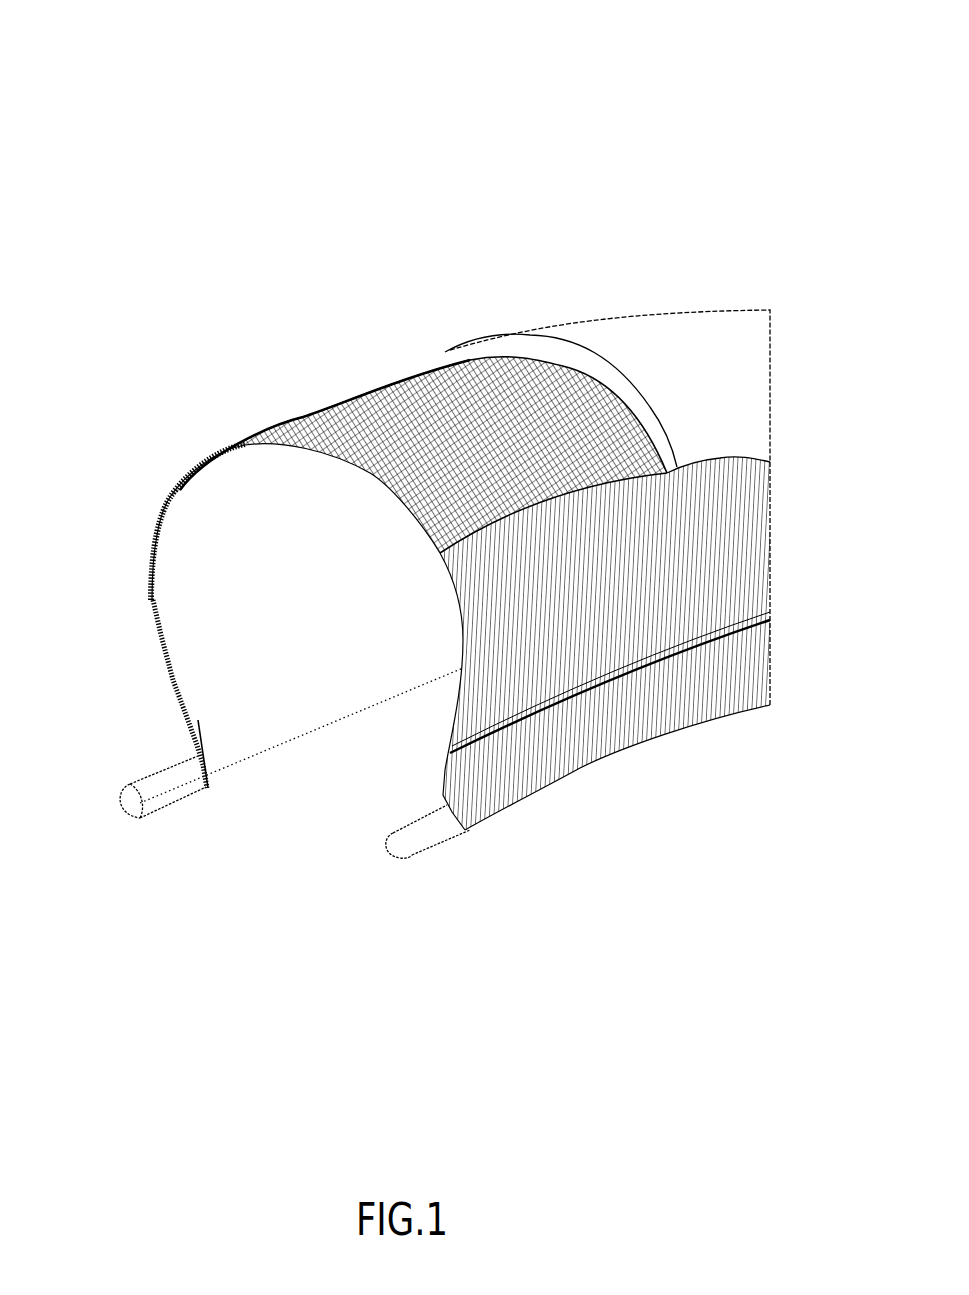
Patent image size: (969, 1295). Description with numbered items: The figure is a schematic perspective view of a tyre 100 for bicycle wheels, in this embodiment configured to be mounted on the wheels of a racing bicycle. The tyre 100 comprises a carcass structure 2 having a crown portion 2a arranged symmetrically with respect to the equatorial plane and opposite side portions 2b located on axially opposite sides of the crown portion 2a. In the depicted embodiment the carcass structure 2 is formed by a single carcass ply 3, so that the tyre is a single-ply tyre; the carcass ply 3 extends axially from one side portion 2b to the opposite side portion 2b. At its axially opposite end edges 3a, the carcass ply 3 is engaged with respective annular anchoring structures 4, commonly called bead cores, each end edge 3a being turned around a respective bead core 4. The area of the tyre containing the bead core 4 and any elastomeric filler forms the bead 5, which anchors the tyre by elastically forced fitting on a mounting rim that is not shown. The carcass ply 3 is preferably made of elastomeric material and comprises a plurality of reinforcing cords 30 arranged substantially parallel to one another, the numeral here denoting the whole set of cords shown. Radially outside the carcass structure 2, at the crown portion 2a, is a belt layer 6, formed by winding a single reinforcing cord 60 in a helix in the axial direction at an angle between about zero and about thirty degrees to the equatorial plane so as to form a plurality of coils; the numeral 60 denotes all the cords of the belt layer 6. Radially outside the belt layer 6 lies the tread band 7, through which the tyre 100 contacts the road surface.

The tyre 100 is at (297, 308).
The carcass structure 2 is at (232, 678).
The crown portion 2a is at (170, 478).
The side portions 2b is at (165, 726).
The carcass ply 3 is at (150, 565).
The end edges 3a is at (193, 733).
The annular anchoring structure 4 is at (132, 801).
The bead 5 is at (217, 800).
The belt layer 6 is at (241, 418).
The tread band 7 is at (608, 335).
The reinforcing cords 30 is at (567, 616).
The reinforcing cord 60 is at (467, 417).